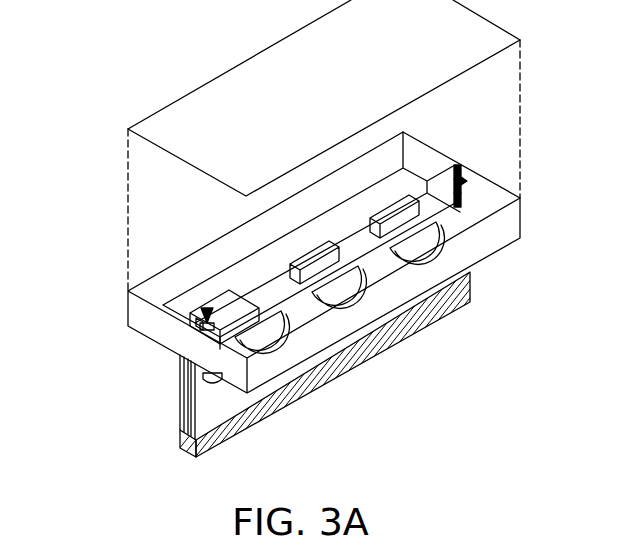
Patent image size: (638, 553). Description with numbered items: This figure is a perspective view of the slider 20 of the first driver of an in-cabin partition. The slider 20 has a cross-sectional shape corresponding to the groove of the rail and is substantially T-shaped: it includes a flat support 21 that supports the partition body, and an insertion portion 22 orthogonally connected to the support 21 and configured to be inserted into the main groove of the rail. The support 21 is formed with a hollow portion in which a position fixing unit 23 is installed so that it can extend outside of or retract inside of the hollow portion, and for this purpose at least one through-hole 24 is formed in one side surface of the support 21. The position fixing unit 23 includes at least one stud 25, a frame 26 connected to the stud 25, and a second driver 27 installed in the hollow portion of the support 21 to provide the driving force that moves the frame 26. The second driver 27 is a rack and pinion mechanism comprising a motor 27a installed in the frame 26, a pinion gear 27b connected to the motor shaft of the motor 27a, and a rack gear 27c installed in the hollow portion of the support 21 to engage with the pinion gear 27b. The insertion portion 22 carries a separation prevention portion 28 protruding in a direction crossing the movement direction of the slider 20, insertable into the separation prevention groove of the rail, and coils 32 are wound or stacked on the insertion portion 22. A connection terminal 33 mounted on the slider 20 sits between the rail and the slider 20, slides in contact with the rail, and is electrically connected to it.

The slider 20 is at (123, 35).
The support 21 is at (513, 218).
The insertion portion 22 is at (379, 364).
The position fixing unit 23 is at (62, 194).
The through-hole 24 is at (449, 186).
The stud 25 is at (222, 305).
The frame 26 is at (245, 292).
The second driver 27 is at (210, 318).
The motor 27a is at (447, 183).
The pinion gear 27b is at (460, 186).
The rack gear 27c is at (461, 177).
The separation prevention portion 28 is at (217, 384).
The coils 32 is at (181, 385).
The connection terminal 33 is at (470, 290).